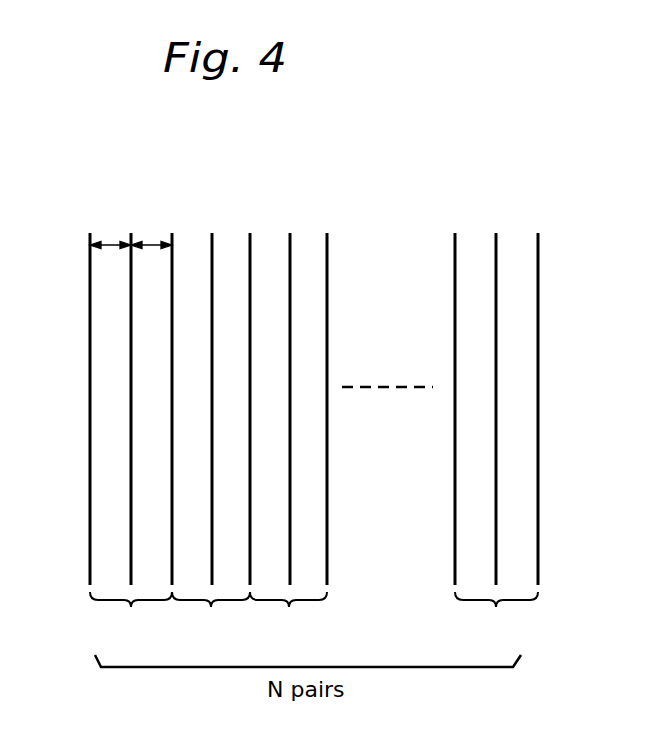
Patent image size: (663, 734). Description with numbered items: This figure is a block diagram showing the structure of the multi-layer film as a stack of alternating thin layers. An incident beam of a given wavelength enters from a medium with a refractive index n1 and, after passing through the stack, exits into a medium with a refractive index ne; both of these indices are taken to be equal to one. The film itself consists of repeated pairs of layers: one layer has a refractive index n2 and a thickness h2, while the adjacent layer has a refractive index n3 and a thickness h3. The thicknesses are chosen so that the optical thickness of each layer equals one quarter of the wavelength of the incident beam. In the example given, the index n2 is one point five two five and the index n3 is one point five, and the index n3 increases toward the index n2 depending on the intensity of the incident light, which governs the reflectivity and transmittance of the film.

The refractive index of incident medium n1 is at (49, 387).
The refractive index of first layer n2 is at (286, 410).
The refractive index of second layer n3 is at (327, 410).
The refractive index of exit medium ne is at (570, 387).
The thickness of first layer h2 is at (110, 235).
The thickness of second layer h3 is at (151, 235).